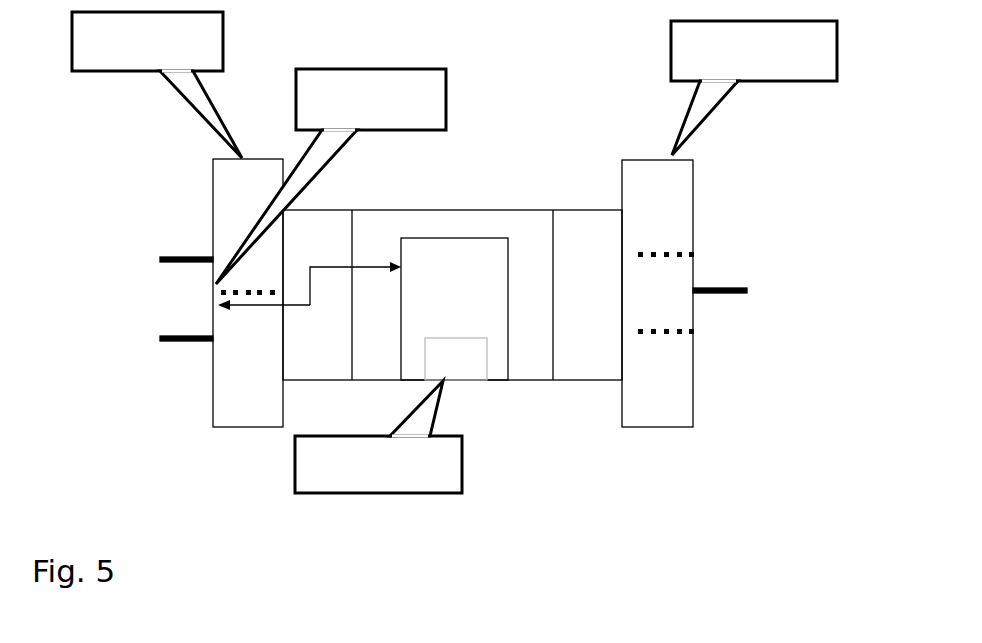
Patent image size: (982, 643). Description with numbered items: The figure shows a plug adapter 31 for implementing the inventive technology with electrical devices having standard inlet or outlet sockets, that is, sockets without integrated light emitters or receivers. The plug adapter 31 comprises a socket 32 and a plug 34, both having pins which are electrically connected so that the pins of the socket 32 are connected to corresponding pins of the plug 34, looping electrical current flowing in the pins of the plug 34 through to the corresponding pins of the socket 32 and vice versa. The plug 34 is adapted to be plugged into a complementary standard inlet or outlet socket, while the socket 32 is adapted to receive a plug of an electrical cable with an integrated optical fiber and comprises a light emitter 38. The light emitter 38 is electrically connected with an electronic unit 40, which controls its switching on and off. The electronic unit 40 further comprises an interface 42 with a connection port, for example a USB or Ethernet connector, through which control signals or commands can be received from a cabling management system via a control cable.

The plug adapter 31 is at (523, 76).
The socket 32 is at (247, 427).
The plug 34 is at (667, 427).
The light emitter 38 is at (210, 302).
The electronic unit 40 is at (363, 309).
The interface 42 is at (391, 415).